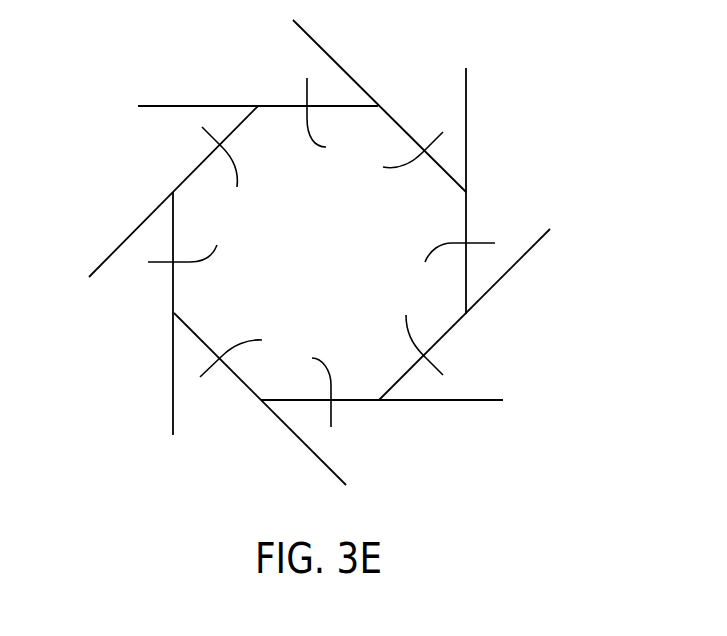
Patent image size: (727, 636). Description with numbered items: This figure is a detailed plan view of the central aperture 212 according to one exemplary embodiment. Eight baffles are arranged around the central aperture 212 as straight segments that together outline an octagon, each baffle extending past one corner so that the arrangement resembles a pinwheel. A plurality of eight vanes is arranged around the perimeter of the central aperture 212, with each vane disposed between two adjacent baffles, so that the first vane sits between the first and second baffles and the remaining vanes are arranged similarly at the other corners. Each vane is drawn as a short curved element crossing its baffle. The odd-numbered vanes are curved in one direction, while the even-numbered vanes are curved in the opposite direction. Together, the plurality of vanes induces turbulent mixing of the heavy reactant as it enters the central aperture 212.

The central aperture 212 is at (335, 267).